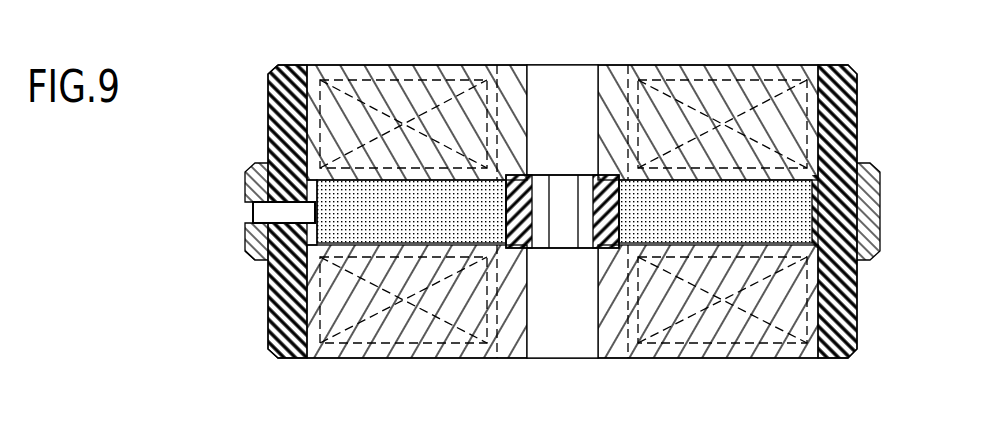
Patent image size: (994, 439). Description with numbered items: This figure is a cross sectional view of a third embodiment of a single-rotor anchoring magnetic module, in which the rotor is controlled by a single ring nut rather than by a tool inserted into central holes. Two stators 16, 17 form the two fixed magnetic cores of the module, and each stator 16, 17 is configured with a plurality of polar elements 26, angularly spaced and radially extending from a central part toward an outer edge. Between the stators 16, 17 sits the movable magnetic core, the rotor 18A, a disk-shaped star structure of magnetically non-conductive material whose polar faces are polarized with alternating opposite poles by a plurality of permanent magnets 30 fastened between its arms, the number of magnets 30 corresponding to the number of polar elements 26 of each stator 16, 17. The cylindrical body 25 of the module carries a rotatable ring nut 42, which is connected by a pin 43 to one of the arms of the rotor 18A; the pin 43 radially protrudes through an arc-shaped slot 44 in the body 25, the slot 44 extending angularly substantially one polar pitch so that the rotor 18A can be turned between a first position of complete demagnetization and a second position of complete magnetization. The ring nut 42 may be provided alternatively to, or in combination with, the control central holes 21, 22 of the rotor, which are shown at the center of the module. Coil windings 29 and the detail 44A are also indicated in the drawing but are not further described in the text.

The stator 16 is at (875, 118).
The stator 17 is at (875, 329).
The rotor 18A is at (884, 227).
The control central hole 21 is at (551, 135).
The control central hole 22 is at (565, 190).
The cylindrical body 25 is at (268, 335).
The polar element 26 is at (290, 97).
The coil winding 29 is at (735, 80).
The permanent magnet 30 is at (428, 197).
The rotatable ring nut 42 is at (257, 183).
The pin 43 is at (273, 212).
The arc-shaped slot 44 is at (267, 225).
The flange chamfer 44A is at (217, 345).